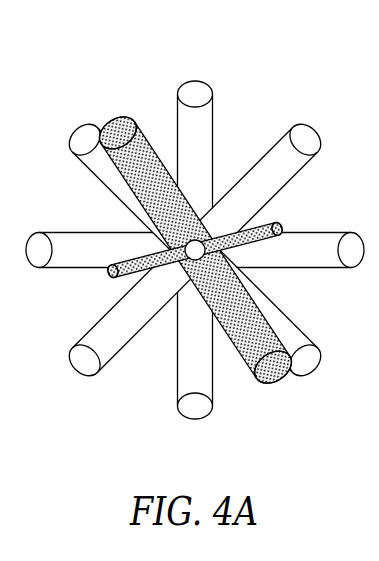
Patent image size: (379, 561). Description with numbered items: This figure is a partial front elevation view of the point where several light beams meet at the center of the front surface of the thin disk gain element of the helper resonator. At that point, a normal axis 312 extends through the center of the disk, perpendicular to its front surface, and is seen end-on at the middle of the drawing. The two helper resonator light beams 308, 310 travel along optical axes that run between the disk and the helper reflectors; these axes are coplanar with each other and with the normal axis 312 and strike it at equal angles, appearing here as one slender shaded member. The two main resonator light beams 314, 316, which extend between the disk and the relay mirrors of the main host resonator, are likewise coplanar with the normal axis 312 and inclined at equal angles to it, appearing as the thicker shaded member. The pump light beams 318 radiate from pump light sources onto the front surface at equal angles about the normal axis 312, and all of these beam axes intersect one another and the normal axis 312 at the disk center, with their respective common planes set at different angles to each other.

The helper resonator light beam 308 is at (278, 228).
The helper resonator light beam 310 is at (110, 275).
The normal axis 312 is at (195, 240).
The main resonator light beam 314 is at (112, 127).
The main resonator light beam 316 is at (275, 378).
The pump light beams 318 is at (195, 90).